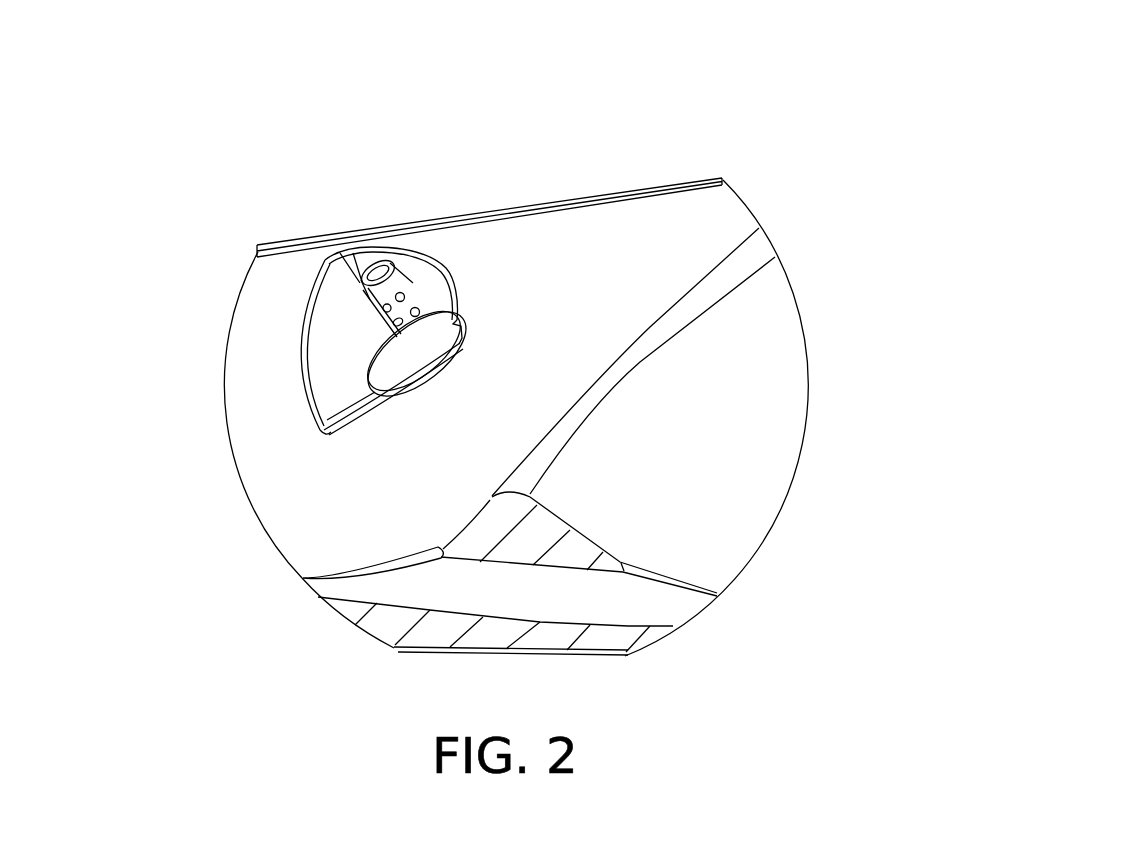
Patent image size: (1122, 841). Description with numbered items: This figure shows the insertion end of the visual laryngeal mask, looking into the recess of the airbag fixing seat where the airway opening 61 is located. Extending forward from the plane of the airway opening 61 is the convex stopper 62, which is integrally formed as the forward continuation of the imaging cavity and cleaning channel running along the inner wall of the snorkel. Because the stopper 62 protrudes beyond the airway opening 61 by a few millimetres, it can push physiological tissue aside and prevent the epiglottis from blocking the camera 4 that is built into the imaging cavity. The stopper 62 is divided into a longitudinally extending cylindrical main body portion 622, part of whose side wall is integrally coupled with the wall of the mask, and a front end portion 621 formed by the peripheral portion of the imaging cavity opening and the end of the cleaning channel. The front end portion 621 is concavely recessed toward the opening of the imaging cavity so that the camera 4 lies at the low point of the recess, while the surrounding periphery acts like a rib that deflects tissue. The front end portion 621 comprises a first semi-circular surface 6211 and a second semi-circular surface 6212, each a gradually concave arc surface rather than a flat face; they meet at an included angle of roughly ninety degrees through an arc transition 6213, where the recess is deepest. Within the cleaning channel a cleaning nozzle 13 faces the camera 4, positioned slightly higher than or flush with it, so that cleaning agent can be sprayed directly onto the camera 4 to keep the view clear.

The camera 4 is at (402, 357).
The cleaning nozzle 13 is at (325, 265).
The airway opening 61 is at (688, 420).
The stopper 62 is at (327, 428).
The front end portion 621 is at (365, 387).
The main body portion 622 is at (455, 272).
The first semi-circular surface 6211 is at (318, 432).
The second semi-circular surface 6212 is at (323, 392).
The transition 6213 is at (323, 418).